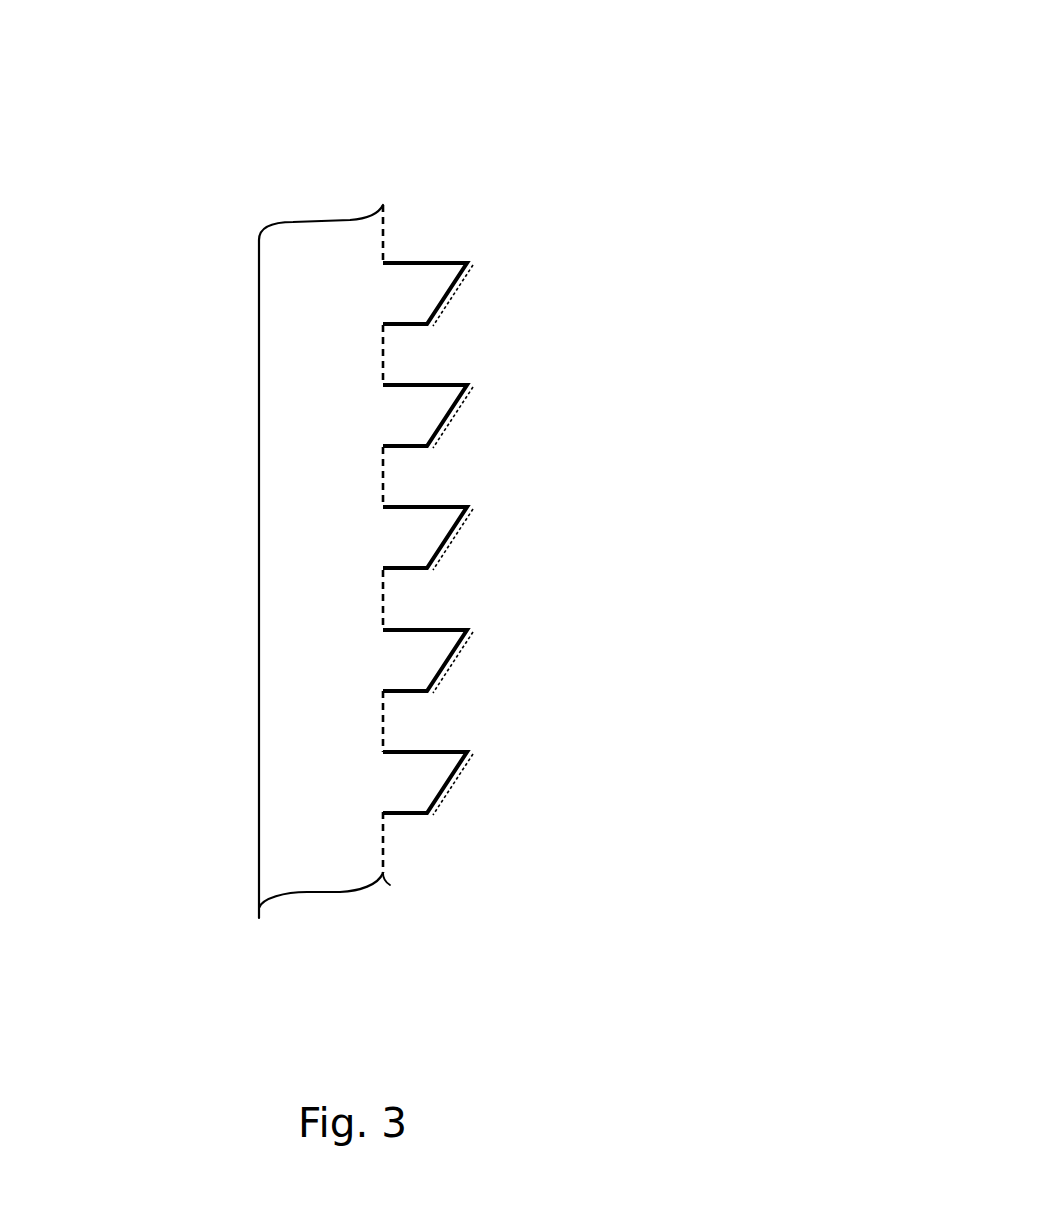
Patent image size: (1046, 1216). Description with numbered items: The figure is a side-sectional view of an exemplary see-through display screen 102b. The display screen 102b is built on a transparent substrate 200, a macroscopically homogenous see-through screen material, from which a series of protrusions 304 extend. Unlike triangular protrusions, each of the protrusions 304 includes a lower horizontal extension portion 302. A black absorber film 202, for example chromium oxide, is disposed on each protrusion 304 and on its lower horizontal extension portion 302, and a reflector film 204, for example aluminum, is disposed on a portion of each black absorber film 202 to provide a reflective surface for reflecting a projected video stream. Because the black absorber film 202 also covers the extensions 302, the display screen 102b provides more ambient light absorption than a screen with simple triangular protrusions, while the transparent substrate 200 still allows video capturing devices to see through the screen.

The see-through display screen 102b is at (745, 43).
The transparent substrate 200 is at (280, 777).
The black absorber film 202 is at (397, 691).
The reflector film 204 is at (455, 413).
The lower horizontal extension portion 302 is at (383, 902).
The protrusions 304 is at (467, 172).